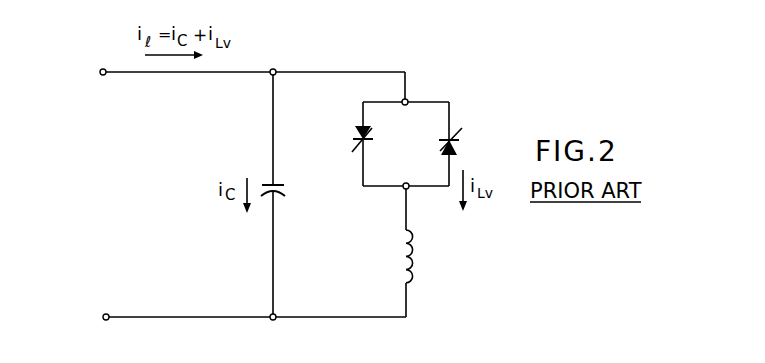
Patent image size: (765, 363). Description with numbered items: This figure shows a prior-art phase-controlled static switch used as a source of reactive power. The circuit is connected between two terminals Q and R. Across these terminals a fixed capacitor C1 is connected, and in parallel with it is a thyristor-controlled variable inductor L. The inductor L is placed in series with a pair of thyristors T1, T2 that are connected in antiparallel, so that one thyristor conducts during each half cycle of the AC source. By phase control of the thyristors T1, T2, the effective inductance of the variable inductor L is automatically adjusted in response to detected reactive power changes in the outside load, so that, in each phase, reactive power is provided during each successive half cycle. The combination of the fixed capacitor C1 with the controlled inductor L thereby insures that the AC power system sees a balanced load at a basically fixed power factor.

The terminal Q is at (95, 73).
The terminal R is at (97, 319).
The fixed capacitor C1 is at (284, 194).
The thyristor T1 is at (371, 138).
The thyristor T2 is at (446, 144).
The variable inductor L is at (403, 253).